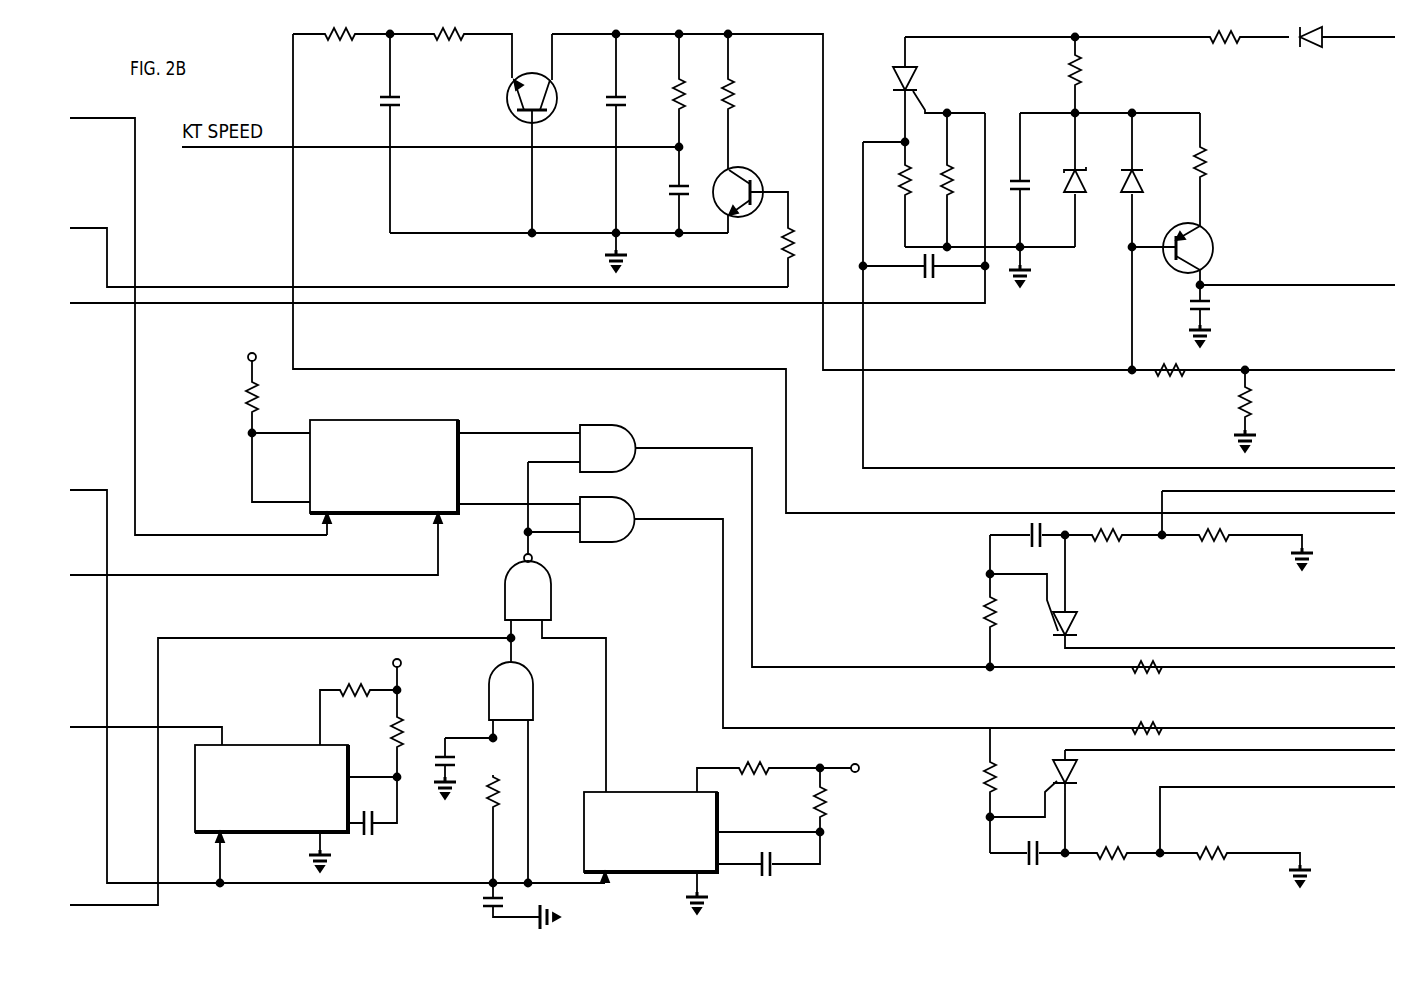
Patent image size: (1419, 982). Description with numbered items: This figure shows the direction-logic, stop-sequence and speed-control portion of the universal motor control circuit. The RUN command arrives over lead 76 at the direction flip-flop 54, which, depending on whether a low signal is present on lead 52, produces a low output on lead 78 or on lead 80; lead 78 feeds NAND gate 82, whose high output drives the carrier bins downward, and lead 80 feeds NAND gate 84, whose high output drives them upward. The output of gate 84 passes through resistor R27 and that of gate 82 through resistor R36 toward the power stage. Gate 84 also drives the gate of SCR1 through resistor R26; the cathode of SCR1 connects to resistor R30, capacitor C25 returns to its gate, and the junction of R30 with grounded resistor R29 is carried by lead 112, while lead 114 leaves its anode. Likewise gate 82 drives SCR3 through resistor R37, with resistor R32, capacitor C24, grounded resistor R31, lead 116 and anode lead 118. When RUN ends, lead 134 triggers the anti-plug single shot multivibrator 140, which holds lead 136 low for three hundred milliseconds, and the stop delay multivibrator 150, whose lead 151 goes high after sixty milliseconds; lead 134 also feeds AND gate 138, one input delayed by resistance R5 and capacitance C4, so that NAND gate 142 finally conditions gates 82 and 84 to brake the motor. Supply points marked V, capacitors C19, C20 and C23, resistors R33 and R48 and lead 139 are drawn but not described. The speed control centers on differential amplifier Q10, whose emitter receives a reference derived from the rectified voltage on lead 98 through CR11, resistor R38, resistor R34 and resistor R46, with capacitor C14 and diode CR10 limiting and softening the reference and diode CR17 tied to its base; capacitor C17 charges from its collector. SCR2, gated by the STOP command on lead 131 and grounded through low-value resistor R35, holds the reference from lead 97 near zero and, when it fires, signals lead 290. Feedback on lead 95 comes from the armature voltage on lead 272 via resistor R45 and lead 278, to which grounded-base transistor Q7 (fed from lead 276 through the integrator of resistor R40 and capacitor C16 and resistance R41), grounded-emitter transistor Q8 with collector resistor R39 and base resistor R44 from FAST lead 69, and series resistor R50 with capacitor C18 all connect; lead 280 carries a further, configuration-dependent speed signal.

The lead 52 is at (116, 118).
The direction flip-flop 54 is at (408, 419).
The lead 69 is at (103, 228).
The lead 76 is at (92, 575).
The lead 78 is at (508, 503).
The lead 80 is at (492, 432).
The NAND gate 82 is at (633, 507).
The NAND gate 84 is at (633, 425).
The lead 95 is at (1130, 300).
The lead 97 is at (1140, 38).
The lead 98 is at (1378, 38).
The lead 112 is at (1162, 491).
The lead 114 is at (1340, 648).
The lead 116 is at (1326, 788).
The lead 118 is at (1266, 750).
The lead 131 is at (90, 303).
The lead 134 is at (92, 490).
The lead 136 is at (86, 727).
The AND gate 138 is at (536, 682).
The line 139 is at (428, 636).
The anti-plug single shot multivibrator 140 is at (268, 744).
The NAND gate 142 is at (552, 593).
The stop delay multivibrator 150 is at (645, 791).
The lead 151 is at (607, 670).
The lead 272 is at (1375, 370).
The lead 276 is at (503, 369).
The lead 278 is at (770, 36).
The lead 280 is at (308, 148).
The lead 290 is at (866, 270).
The supply voltage V is at (277, 414).
The resistor R40 is at (352, 42).
The resistance R41 is at (460, 40).
The capacitor C16 is at (380, 104).
The transistor Q7 is at (509, 103).
The capacitor C19 is at (608, 95).
The resistor R50 is at (676, 78).
The resistor R39 is at (734, 108).
The capacitor C18 is at (674, 188).
The transistor Q8 is at (762, 176).
The resistor R44 is at (782, 256).
The silicon controlled rectifier SCR2 is at (918, 75).
The resistor R35 is at (912, 165).
The resistor R33 is at (951, 198).
The resistor R34 is at (1068, 70).
The capacitor C14 is at (1030, 180).
The diode CR10 is at (1084, 172).
The diode CR17 is at (1124, 200).
The resistor R46 is at (1212, 172).
The differential amplifier Q10 is at (1214, 234).
The resistor R38 is at (1236, 40).
The diode CR11 is at (1302, 48).
The capacitor C23 is at (936, 276).
The capacitor C17 is at (1212, 312).
The resistor R45 is at (1168, 384).
The resistor R48 is at (1256, 402).
The capacitance C4 is at (444, 752).
The resistance R5 is at (490, 810).
The capacitor C20 is at (478, 903).
The capacitor C25 is at (1040, 522).
The resistor R30 is at (1120, 544).
The resistor R29 is at (1212, 544).
The resistor R26 is at (984, 606).
The silicon controlled rectifier SCR1 is at (1080, 627).
The resistor R27 is at (1162, 676).
The resistor R36 is at (1136, 720).
The silicon controlled rectifier SCR3 is at (1078, 778).
The resistor R37 is at (984, 786).
The capacitor C24 is at (1028, 862).
The resistor R32 is at (1102, 860).
The resistor R31 is at (1202, 860).